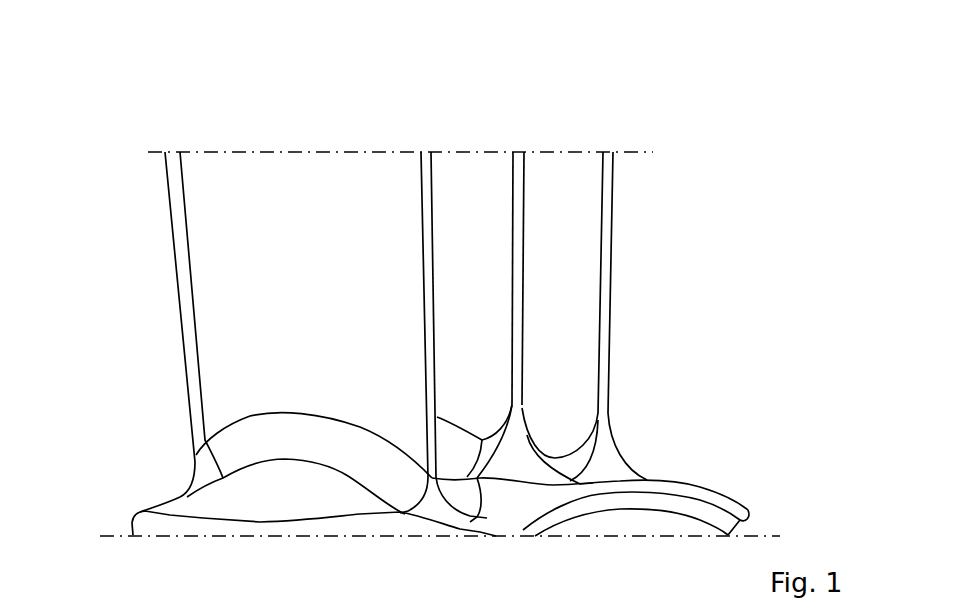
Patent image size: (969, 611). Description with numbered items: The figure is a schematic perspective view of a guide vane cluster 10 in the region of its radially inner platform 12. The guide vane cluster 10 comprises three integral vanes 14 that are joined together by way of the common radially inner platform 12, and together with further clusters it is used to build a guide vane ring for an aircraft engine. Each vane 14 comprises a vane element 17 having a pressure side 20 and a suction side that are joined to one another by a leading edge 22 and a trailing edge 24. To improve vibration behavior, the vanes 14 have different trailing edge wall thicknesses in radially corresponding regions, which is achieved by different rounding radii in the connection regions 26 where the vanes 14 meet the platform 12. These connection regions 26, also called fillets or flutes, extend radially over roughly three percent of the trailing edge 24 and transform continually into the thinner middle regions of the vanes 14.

The guide vane cluster 10 is at (123, 95).
The radially inner platform 12 is at (709, 496).
The vane 14 is at (243, 102).
The vane element 17 is at (296, 170).
The pressure side 20 is at (551, 222).
The leading edge 22 is at (178, 220).
The trailing edge 24 is at (431, 312).
The connection region 26 is at (634, 449).